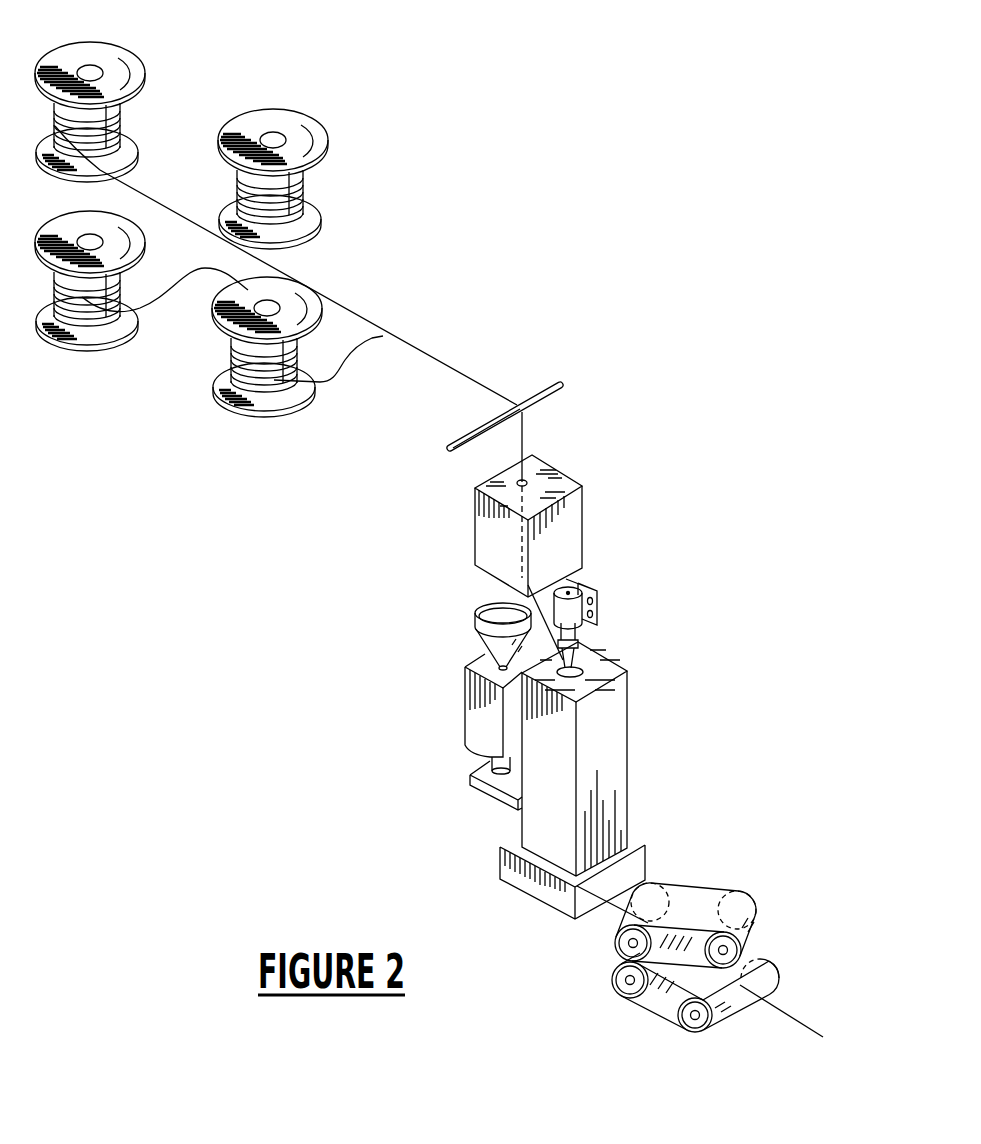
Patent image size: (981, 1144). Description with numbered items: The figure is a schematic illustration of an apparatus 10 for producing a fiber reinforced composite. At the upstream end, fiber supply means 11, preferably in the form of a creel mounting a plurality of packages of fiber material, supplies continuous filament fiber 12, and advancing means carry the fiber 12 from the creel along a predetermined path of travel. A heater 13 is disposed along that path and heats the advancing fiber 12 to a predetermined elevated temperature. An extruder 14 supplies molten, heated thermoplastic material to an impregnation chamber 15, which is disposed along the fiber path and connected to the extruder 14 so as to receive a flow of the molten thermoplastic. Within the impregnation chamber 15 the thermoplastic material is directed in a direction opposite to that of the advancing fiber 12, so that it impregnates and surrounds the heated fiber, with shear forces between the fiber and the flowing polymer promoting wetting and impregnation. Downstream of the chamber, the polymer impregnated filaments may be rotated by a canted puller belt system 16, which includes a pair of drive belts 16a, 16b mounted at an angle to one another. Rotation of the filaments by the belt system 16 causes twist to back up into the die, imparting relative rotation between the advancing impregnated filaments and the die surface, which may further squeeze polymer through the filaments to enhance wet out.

The apparatus 10 is at (664, 478).
The fiber supply means 11 is at (113, 55).
The continuous filament fiber 12 is at (350, 368).
The heater 13 is at (540, 470).
The extruder 14 is at (470, 782).
The impregnation chamber 15 is at (547, 810).
The canted puller belt system 16 is at (716, 946).
The drive belt 16a is at (670, 1007).
The drive belt 16b is at (687, 895).